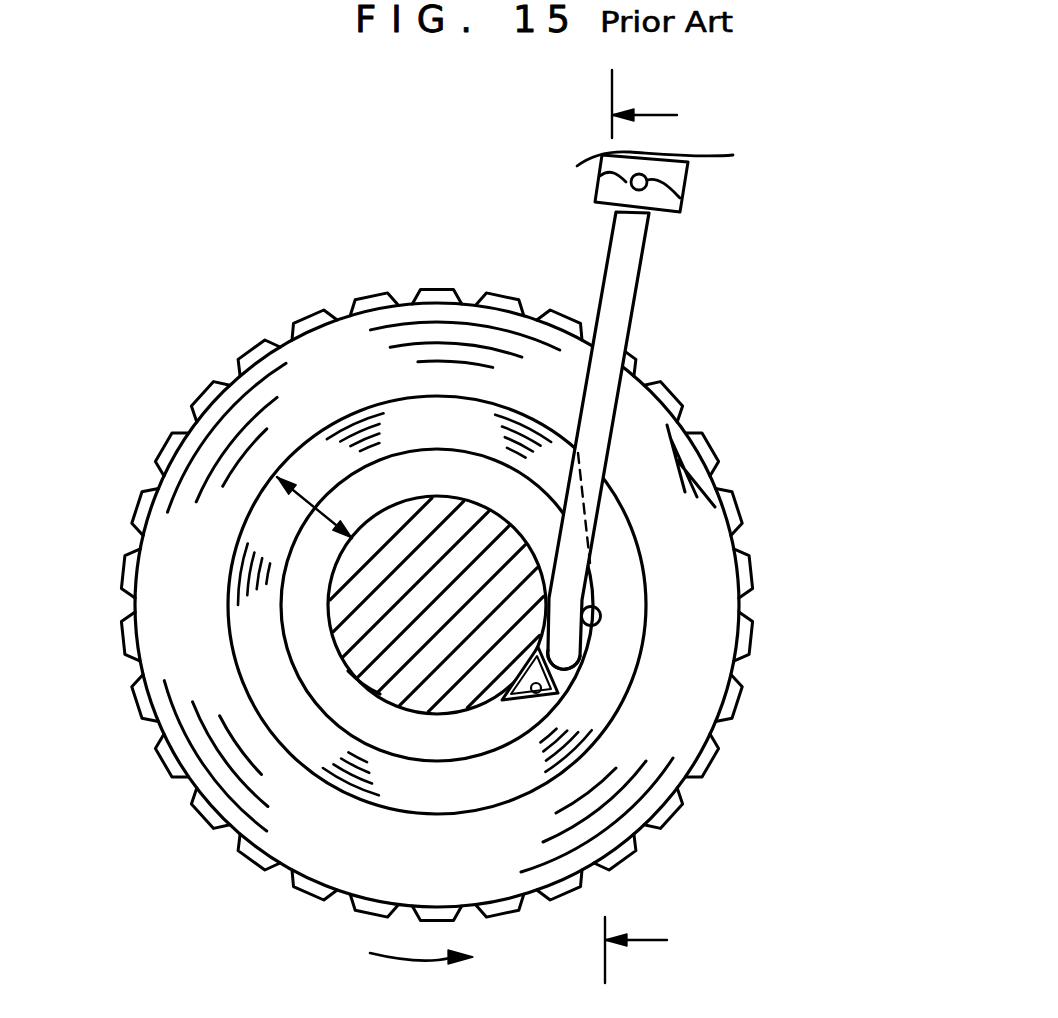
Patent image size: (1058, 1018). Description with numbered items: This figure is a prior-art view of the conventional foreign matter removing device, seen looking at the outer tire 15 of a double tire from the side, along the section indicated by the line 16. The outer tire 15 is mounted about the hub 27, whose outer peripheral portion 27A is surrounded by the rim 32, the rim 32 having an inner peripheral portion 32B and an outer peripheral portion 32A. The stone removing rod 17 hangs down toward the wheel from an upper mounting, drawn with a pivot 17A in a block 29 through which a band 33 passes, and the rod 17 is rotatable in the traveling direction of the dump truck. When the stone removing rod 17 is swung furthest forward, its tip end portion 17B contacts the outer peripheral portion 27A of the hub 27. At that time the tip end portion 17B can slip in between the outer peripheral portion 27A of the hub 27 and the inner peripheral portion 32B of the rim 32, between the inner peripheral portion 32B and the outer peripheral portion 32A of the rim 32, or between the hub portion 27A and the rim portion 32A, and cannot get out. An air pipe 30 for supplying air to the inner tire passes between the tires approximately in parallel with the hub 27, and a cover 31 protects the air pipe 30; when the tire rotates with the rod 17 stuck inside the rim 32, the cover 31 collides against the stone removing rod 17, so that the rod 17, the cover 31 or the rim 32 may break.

The outer tire 15 is at (800, 432).
The section line 16 is at (663, 526).
The stone removing rod 17 is at (641, 290).
The pivot pin 17A is at (600, 176).
The tip end portion 17B is at (558, 657).
The hub 27 is at (353, 624).
The outer peripheral portion of the hub 27A is at (345, 668).
The mounting block 29 is at (680, 198).
The air pipe 30 is at (558, 693).
The cover 31 is at (514, 705).
The rim 32 is at (605, 692).
The outer peripheral portion of the rim 32A is at (648, 625).
The inner peripheral portion of the rim 32B is at (598, 606).
The belt 33 is at (685, 178).